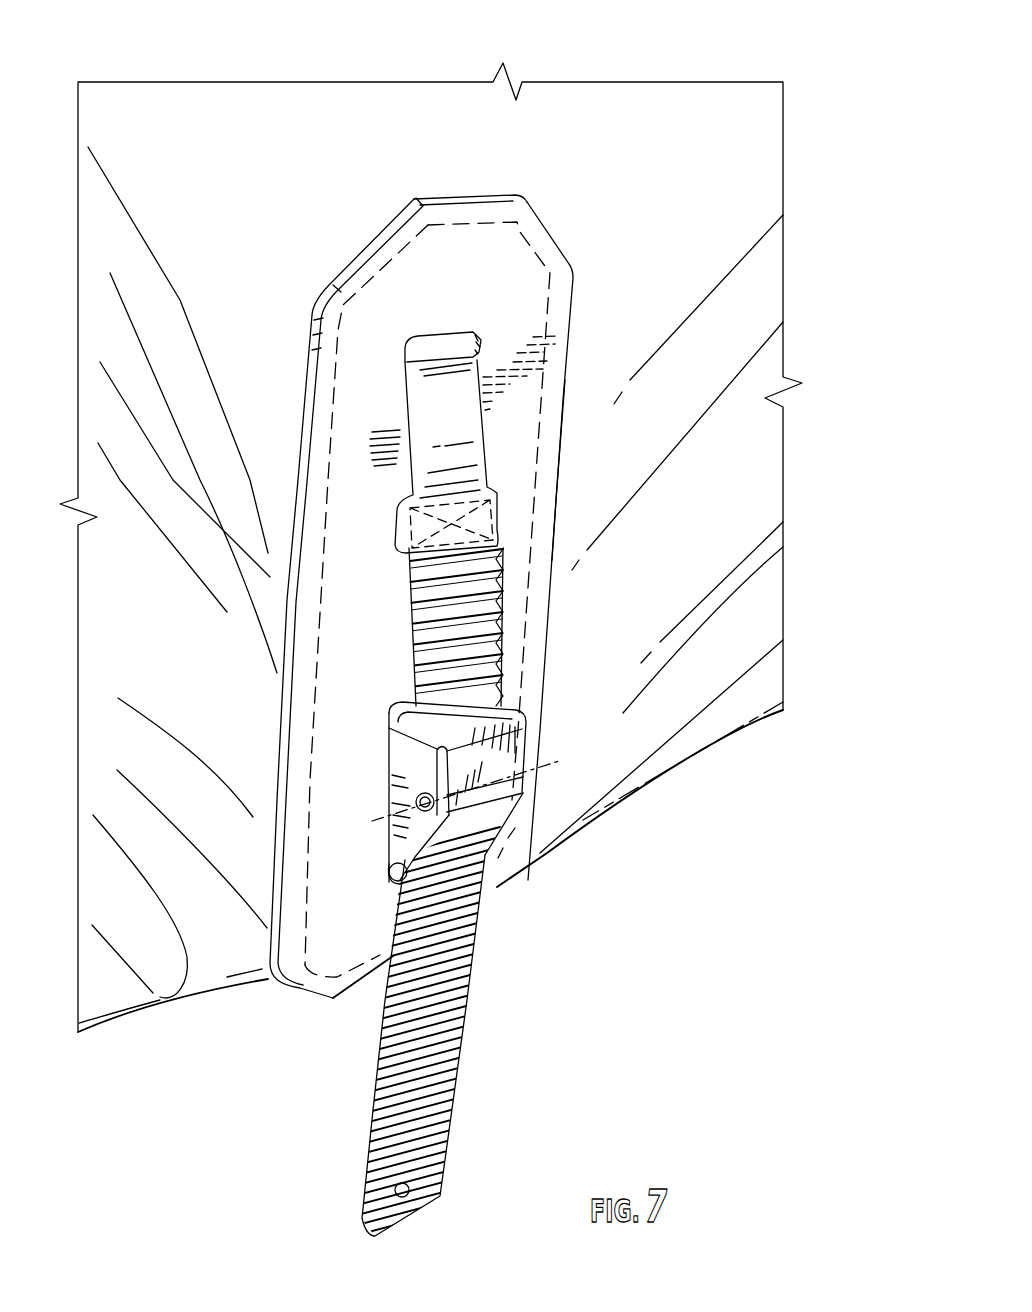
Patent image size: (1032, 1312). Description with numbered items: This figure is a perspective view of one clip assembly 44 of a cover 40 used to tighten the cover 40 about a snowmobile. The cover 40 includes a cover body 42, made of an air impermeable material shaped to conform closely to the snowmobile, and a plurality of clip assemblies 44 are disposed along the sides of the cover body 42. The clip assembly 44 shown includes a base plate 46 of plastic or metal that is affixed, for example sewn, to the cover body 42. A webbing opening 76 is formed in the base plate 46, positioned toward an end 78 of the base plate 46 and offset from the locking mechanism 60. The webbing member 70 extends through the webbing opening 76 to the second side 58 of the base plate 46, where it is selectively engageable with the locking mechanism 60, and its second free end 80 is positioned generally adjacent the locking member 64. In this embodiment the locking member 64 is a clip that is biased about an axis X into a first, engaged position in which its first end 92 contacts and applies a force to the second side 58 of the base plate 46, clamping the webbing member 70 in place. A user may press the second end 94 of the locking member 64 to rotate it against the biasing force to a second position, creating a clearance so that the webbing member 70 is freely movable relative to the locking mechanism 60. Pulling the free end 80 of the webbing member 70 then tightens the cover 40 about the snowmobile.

The cover 40 is at (829, 188).
The cover body 42 is at (702, 148).
The clip assembly 44 is at (324, 232).
The base plate 46 is at (557, 500).
The second side of the base plate 58 is at (405, 678).
The locking mechanism 60 is at (367, 862).
The locking member 64 is at (487, 815).
The webbing member 70 is at (404, 406).
The webbing opening 76 is at (478, 333).
The end of the base plate 78 is at (468, 207).
The second free end of the webbing member 80 is at (409, 1196).
The first end of the locking member 92 is at (457, 840).
The second end of the locking member 94 is at (543, 723).